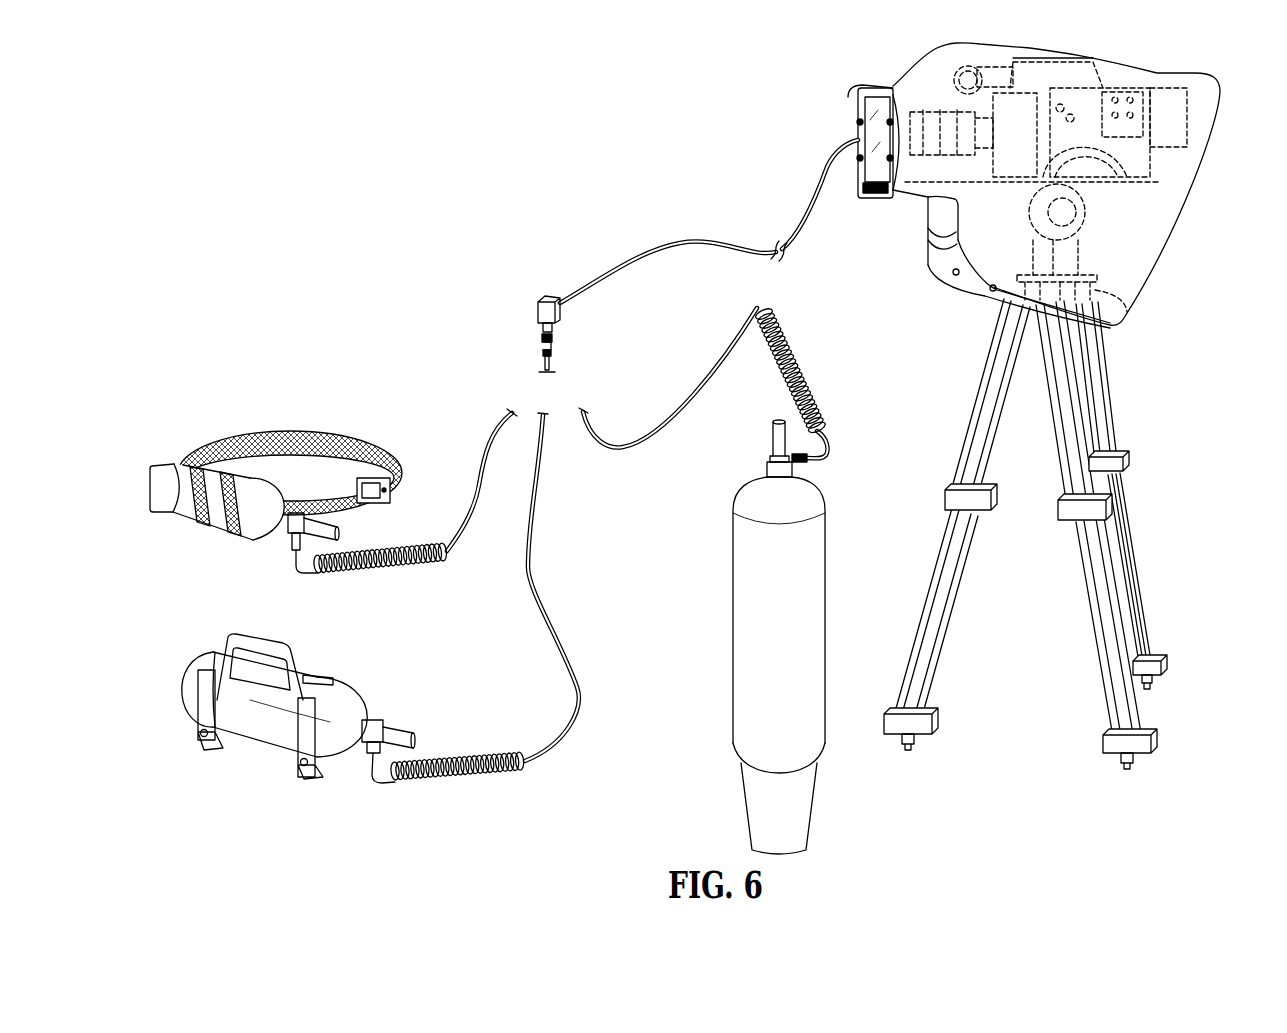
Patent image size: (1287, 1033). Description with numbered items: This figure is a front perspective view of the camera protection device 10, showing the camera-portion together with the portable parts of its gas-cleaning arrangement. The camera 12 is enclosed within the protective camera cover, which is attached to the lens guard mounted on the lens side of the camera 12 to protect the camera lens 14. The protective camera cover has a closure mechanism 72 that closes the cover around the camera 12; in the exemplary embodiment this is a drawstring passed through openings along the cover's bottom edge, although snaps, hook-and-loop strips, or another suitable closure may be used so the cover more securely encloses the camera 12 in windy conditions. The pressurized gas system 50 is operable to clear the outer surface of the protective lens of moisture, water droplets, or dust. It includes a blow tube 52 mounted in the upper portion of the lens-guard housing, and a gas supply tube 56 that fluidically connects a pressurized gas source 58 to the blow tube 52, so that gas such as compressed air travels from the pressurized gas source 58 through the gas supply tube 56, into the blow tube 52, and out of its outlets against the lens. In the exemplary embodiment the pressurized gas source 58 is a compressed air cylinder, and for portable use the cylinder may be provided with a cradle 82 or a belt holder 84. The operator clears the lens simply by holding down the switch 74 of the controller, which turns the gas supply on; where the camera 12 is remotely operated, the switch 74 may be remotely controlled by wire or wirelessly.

The camera protection device 10 is at (1199, 61).
The camera 12 is at (1110, 163).
The camera lens 14 is at (913, 112).
The pressurized gas system 50 is at (246, 568).
The blow tube 52 is at (862, 106).
The gas supply tube 56 is at (680, 243).
The pressurized gas source 58 is at (222, 535).
The closure mechanism 72 is at (1123, 256).
The switch 74 is at (540, 300).
The cradle 82 is at (203, 702).
The belt holder 84 is at (304, 433).